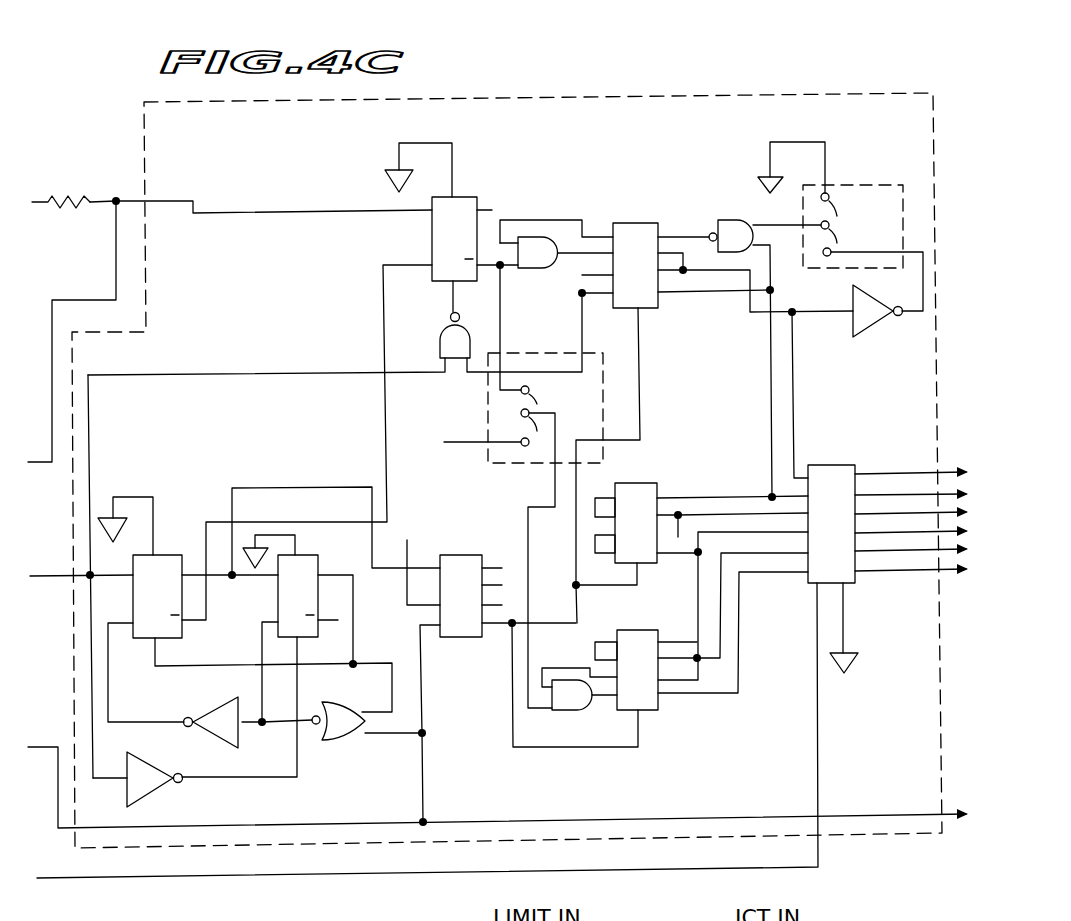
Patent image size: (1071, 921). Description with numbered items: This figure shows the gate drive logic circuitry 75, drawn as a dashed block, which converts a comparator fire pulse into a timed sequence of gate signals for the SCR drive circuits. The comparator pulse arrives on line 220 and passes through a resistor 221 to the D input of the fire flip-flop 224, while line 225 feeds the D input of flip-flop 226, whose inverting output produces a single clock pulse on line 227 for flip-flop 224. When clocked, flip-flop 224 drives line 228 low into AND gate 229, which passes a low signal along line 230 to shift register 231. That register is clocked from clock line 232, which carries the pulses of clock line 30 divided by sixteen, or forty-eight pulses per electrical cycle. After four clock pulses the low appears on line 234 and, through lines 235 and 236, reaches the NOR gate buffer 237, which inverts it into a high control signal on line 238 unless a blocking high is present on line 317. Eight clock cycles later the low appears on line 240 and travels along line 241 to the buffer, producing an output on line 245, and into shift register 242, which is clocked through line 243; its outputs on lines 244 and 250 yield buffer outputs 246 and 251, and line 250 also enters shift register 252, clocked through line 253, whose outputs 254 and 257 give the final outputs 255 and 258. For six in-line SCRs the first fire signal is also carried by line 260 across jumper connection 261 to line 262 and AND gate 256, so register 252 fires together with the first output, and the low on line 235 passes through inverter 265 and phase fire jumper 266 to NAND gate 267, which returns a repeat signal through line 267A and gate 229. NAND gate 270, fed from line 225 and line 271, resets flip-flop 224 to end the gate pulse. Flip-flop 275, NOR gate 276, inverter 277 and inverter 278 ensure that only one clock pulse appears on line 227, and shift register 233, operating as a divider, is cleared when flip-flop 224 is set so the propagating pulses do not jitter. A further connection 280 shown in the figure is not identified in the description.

The gate drive logic circuitry 75 is at (508, 100).
The resistor 221 is at (82, 196).
The line 220 is at (272, 212).
The fire flip-flop 224 is at (428, 240).
The line 228 is at (508, 270).
The line 260 is at (502, 331).
The AND gate 229 is at (531, 247).
The line 267A is at (585, 226).
The line 230 is at (578, 254).
The shift register 231 is at (634, 224).
The clock line 232 is at (640, 407).
The line 271 is at (582, 331).
The NAND gate 270 is at (441, 329).
The line 227 is at (383, 402).
The jumper connection 261 is at (536, 393).
The line 262 is at (528, 563).
The NAND gate 267 is at (728, 220).
The line 241 is at (747, 493).
The line 234 is at (677, 250).
The line 235 is at (750, 318).
The line 240 is at (692, 296).
The phase fire jumper connection 266 is at (836, 246).
The inverter 265 is at (873, 327).
The line 236 is at (796, 415).
The shift register 242 is at (633, 500).
The line 244 is at (703, 496).
The line 250 is at (677, 538).
The NOR gate buffer 237 is at (826, 465).
The control line 238 is at (867, 474).
The line 245 is at (888, 494).
The output line 246 is at (903, 515).
The line 251 is at (930, 533).
The line 255 is at (870, 552).
The sixth control line 258 is at (953, 573).
The shift register divider 233 is at (462, 555).
The line 243 is at (549, 624).
The line 253 is at (534, 748).
The AND gate 256 is at (566, 705).
The shift register 252 is at (650, 712).
The line 254 is at (725, 640).
The line 257 is at (742, 692).
The line 225 is at (50, 573).
The flip-flop 226 is at (168, 554).
The connection line 280 is at (291, 488).
The flip-flop 275 is at (278, 600).
The NOR gate 276 is at (346, 725).
The inverter 277 is at (213, 707).
The inverter 278 is at (148, 797).
The clock line 30 is at (300, 823).
The line 317 is at (189, 879).